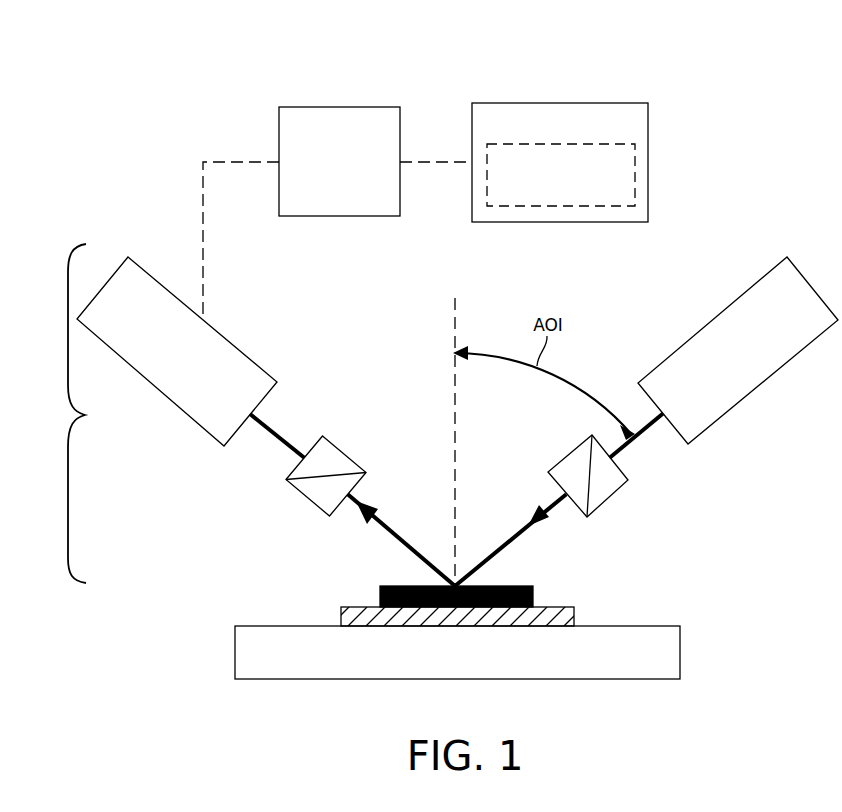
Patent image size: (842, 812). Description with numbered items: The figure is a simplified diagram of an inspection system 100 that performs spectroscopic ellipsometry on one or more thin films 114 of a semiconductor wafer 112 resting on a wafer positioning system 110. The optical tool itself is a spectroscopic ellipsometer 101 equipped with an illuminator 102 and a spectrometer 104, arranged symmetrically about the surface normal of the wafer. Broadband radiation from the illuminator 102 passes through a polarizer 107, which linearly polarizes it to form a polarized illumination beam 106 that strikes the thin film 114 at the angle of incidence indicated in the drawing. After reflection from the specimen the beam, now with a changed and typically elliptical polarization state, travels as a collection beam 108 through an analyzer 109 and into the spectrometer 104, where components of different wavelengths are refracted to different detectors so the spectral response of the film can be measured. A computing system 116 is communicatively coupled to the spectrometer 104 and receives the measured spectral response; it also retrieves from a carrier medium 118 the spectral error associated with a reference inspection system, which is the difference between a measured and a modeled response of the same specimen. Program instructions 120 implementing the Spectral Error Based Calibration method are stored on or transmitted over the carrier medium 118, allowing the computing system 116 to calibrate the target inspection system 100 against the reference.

The inspection system 100 is at (113, 88).
The ellipsometer 101 is at (83, 416).
The illuminator 102 is at (706, 325).
The spectrometer 104 is at (245, 355).
The polarized illumination beam 106 is at (648, 432).
The polarizer 107 is at (573, 456).
The collection beam 108 is at (386, 528).
The analyzer 109 is at (306, 500).
The wafer positioning system 110 is at (680, 652).
The semiconductor wafer 112 is at (574, 617).
The thin film 114 is at (535, 596).
The computing system 116 is at (279, 125).
The carrier medium 118 is at (648, 118).
The program instructions 120 is at (635, 160).